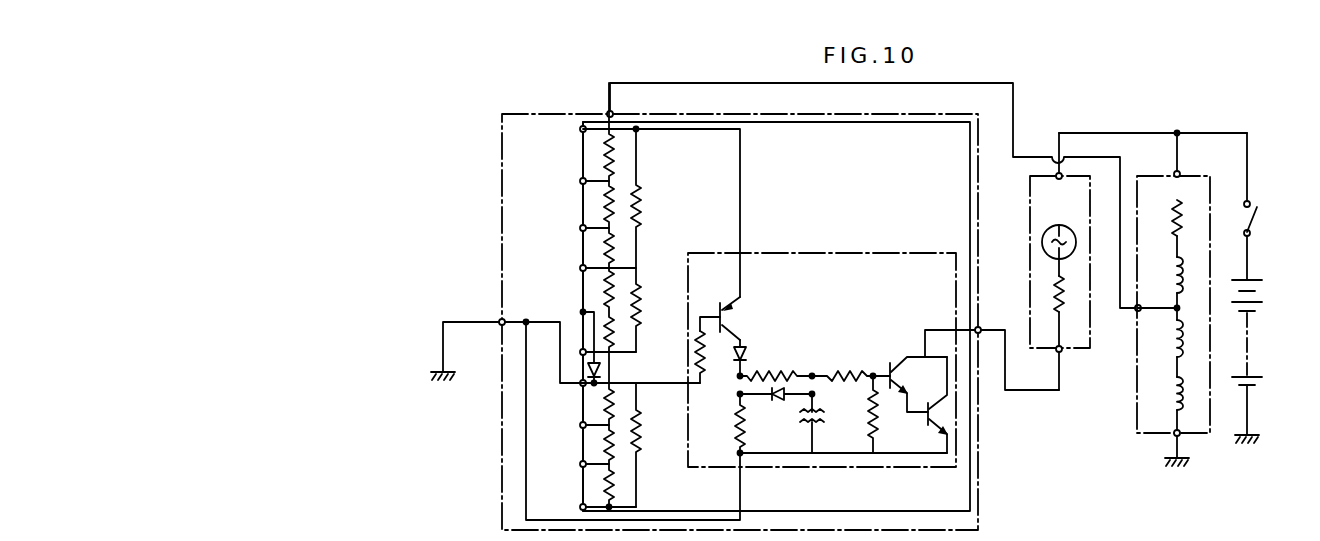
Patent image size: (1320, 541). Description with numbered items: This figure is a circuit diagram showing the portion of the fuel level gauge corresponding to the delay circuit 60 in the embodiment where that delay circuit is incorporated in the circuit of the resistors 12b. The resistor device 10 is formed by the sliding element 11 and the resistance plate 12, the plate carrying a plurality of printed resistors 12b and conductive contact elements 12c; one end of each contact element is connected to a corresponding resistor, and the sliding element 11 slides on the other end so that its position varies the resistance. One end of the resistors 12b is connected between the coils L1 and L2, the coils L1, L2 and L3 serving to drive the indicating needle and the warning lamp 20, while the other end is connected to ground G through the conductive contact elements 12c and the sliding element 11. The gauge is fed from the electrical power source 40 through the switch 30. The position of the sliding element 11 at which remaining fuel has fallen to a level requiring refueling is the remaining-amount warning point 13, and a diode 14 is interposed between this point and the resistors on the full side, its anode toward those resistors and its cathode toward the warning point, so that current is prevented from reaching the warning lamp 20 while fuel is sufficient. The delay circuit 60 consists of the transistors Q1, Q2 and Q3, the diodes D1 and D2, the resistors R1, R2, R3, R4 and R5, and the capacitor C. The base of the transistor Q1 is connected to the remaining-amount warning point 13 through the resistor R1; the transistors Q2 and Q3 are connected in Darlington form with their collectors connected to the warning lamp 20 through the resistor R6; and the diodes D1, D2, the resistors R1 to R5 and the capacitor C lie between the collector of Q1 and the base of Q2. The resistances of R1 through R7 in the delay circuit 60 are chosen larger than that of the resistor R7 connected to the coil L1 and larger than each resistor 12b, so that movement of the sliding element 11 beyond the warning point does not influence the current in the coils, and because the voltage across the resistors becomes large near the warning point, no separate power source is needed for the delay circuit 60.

The resistor device 10 is at (499, 221).
The sliding element 11 is at (570, 391).
The resistance plate 12 is at (594, 110).
The resistors 12b is at (625, 166).
The conductive contact elements 12c is at (593, 196).
The remaining-amount warning point 13 is at (582, 377).
The diode 14 is at (607, 368).
The warning lamp 20 is at (1077, 219).
The switch 30 is at (1263, 226).
The electrical power source 40 is at (1262, 293).
The delay circuit 60 is at (873, 360).
The ground G is at (442, 372).
The transistor Q1 is at (733, 318).
The transistor Q2 is at (974, 371).
The transistor Q3 is at (931, 408).
The diode D1 is at (754, 355).
The diode D2 is at (776, 411).
The capacitor C is at (821, 423).
The resistor R1 is at (714, 357).
The resistor R2 is at (725, 425).
The resistor R3 is at (776, 364).
The resistor R4 is at (851, 364).
The resistor R5 is at (886, 414).
The resistor R6 is at (1080, 306).
The resistor R7 is at (1189, 212).
The coil L1 is at (1172, 274).
The coil L2 is at (1172, 337).
The coil L3 is at (1172, 397).